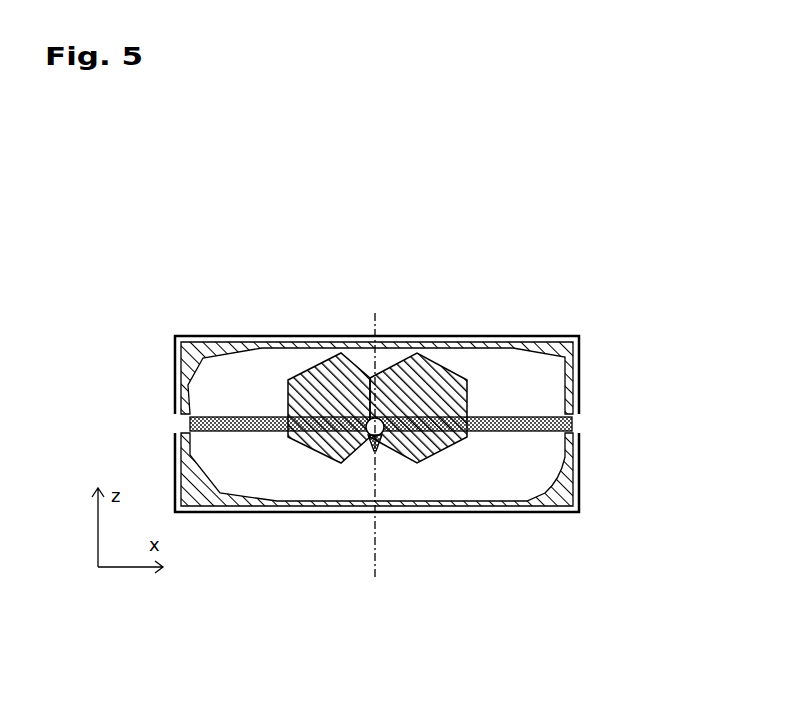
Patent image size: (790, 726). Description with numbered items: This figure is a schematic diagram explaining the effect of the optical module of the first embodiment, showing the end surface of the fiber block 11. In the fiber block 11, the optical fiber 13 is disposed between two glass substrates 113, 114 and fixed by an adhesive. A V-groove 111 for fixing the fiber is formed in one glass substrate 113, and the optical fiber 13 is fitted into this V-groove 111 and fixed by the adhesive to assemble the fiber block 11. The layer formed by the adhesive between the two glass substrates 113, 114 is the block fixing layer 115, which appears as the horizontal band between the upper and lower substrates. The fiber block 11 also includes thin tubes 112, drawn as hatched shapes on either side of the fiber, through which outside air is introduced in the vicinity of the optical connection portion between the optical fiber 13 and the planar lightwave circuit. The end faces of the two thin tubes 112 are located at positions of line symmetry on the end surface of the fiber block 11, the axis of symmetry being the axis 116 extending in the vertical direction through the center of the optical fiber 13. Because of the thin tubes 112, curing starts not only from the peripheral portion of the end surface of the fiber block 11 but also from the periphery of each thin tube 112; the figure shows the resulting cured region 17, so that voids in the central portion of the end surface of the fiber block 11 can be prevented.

The fiber block 11 is at (384, 196).
The optical fiber 13 is at (383, 443).
The cured region 17 is at (435, 383).
The V-groove 111 is at (373, 449).
The thin tube 112 is at (413, 402).
The glass substrate 113 is at (578, 478).
The glass substrate 114 is at (578, 362).
The block fixing layer 115 is at (579, 428).
The axis 116 is at (377, 557).